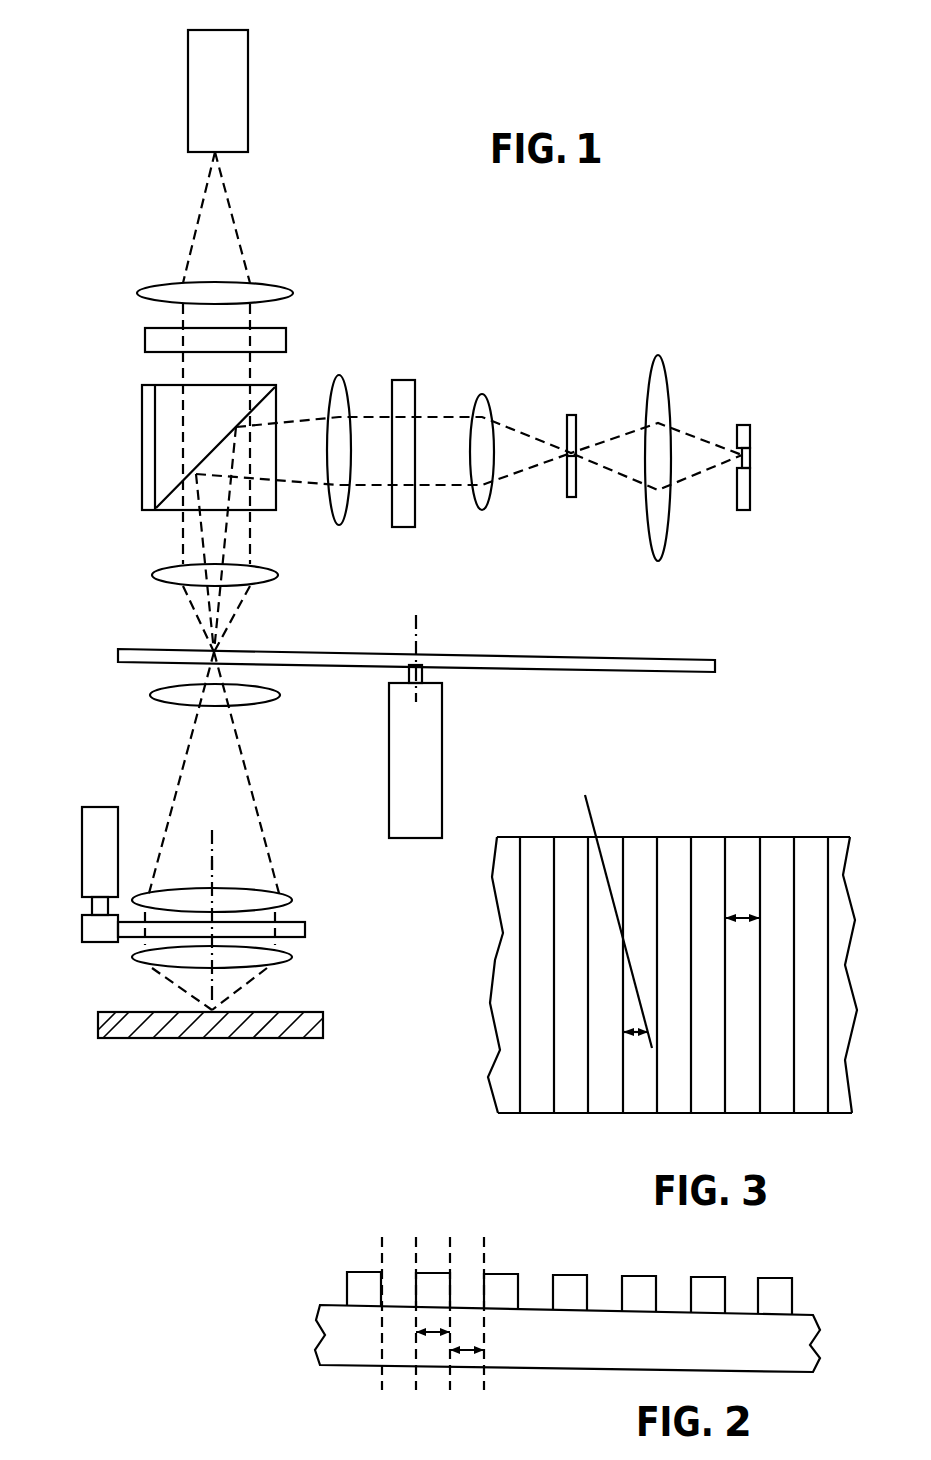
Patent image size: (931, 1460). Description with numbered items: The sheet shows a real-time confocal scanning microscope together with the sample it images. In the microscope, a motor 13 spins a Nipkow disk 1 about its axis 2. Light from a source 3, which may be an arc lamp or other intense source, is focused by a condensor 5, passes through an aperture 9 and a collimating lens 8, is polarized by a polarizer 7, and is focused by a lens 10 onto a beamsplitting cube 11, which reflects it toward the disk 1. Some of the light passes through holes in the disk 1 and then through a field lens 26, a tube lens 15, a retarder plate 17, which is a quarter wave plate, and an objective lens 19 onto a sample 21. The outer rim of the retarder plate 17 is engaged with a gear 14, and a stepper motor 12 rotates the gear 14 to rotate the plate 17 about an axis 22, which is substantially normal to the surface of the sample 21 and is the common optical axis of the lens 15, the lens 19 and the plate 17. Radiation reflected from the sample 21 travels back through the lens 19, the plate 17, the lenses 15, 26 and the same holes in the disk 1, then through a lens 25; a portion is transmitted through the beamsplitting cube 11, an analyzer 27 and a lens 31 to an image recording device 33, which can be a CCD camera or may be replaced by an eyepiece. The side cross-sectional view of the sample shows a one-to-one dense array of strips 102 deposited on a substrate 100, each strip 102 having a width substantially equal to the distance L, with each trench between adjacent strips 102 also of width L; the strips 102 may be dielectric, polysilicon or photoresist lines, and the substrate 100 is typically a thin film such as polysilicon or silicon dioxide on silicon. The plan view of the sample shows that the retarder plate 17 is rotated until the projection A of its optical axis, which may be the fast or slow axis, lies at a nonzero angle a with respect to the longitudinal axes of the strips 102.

In FIG. 1, the Nipkow disk 1 is at (653, 668).
In FIG. 1, the axis 2 is at (417, 633).
In FIG. 1, the source 3 is at (746, 425).
In FIG. 1, the condensor 5 is at (658, 356).
In FIG. 1, the polarizer 7 is at (405, 380).
In FIG. 1, the collimating lens 8 is at (484, 395).
In FIG. 1, the aperture 9 is at (572, 415).
In FIG. 1, the lens 10 is at (339, 375).
In FIG. 1, the beamsplitting cube 11 is at (142, 468).
In FIG. 1, the stepper motor 12 is at (100, 807).
In FIG. 1, the motor 13 is at (433, 722).
In FIG. 1, the gear 14 is at (95, 942).
In FIG. 1, the tube lens 15 is at (290, 897).
In FIG. 1, the retarder plate 17 is at (305, 930).
In FIG. 1, the objective lens 19 is at (285, 957).
In FIG. 1, the sample 21 is at (120, 1020).
In FIG. 1, the axis 22 is at (212, 862).
In FIG. 1, the lens 25 is at (152, 575).
In FIG. 1, the field lens 26 is at (150, 695).
In FIG. 1, the analyzer 27 is at (145, 341).
In FIG. 1, the lens 31 is at (282, 290).
In FIG. 1, the image recording device 33 is at (248, 102).
In FIG. 3, the substrate 100 is at (742, 1105).
In FIG. 2, the substrate 100 is at (765, 1372).
In FIG. 3, the strips 102 is at (710, 837).
In FIG. 2, the strips 102 is at (360, 1272).
In FIG. 3, the projection of optical axis A is at (611, 895).
In FIG. 3, the angle a is at (637, 1037).
In FIG. 3, the distance L is at (742, 915).
In FIG. 2, the distance L is at (428, 1340).